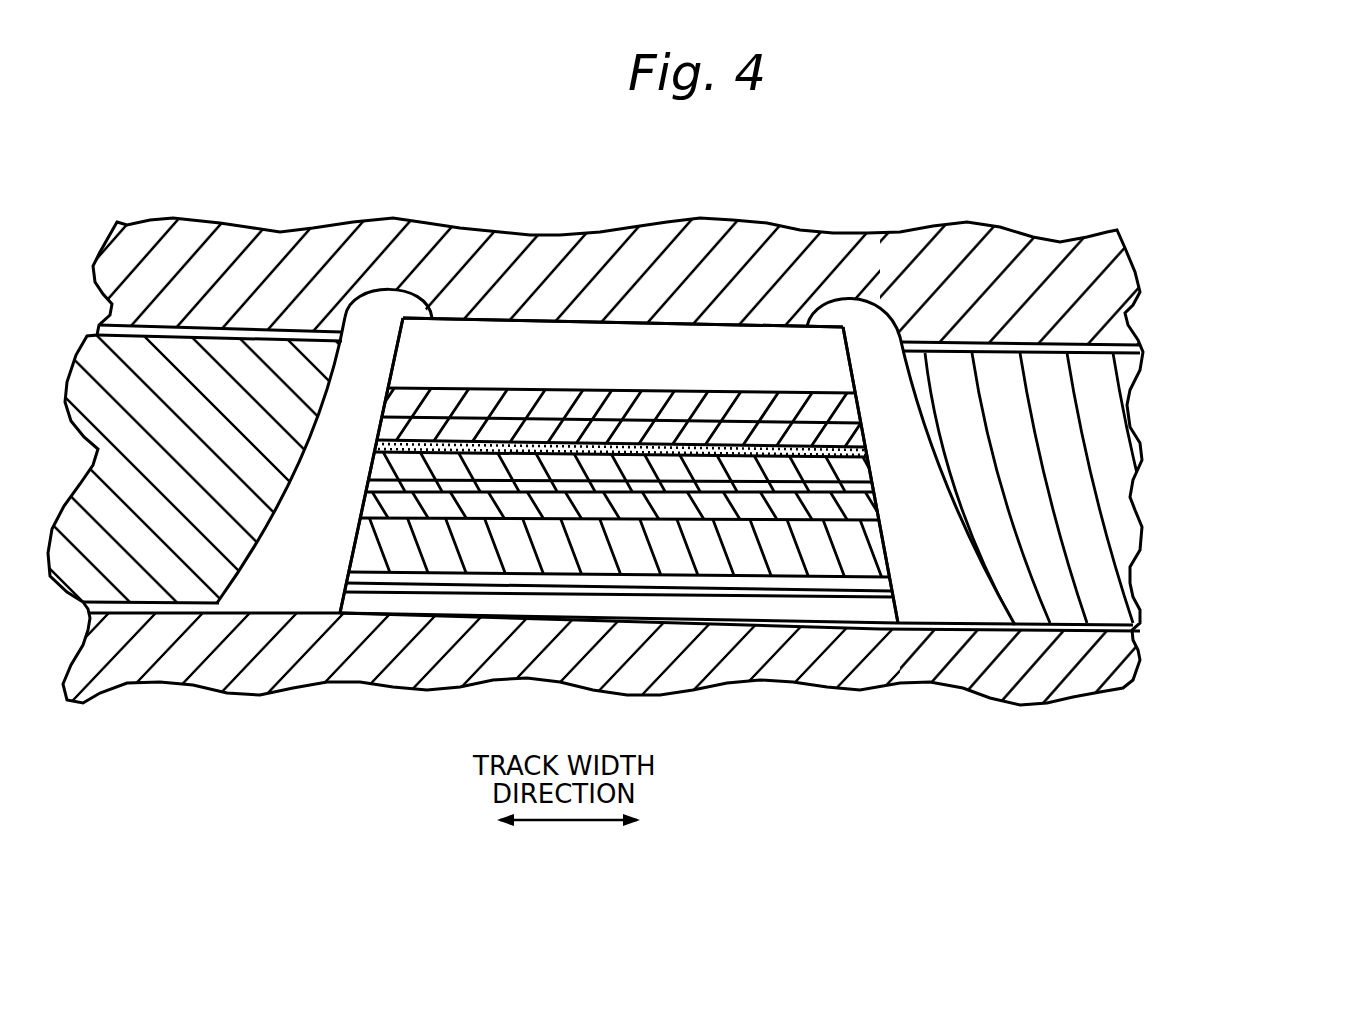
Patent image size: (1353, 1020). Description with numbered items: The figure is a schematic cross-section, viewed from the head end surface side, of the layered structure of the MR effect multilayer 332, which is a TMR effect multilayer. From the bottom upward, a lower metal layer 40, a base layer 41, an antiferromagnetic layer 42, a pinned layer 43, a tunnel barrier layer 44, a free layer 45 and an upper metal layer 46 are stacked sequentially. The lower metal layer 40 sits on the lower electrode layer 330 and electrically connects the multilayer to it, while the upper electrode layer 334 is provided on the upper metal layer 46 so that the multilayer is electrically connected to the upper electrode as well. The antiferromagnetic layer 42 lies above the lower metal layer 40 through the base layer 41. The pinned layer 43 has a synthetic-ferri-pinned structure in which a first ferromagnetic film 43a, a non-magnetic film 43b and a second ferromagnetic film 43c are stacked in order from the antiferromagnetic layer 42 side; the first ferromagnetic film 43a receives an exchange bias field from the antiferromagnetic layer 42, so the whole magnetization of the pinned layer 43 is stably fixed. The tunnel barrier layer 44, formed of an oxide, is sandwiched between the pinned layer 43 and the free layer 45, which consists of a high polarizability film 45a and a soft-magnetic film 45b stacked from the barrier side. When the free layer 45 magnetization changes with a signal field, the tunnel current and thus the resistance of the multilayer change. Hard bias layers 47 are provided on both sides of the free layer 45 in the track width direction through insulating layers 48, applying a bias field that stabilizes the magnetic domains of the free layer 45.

The lower metal layer 40 is at (768, 618).
The base layer 41 is at (890, 591).
The antiferromagnetic layer 42 is at (882, 560).
The pinned layer 43 is at (815, 491).
The first ferromagnetic film 43a is at (876, 519).
The non-magnetic film 43b is at (872, 497).
The second ferromagnetic film 43c is at (870, 481).
The tunnel barrier layer 44 is at (866, 455).
The free layer 45 is at (812, 399).
The high polarizability film 45a is at (862, 437).
The soft-magnetic film 45b is at (858, 410).
The upper metal layer 46 is at (828, 360).
The hard bias layer 47 is at (222, 380).
The insulating layer 48 is at (378, 323).
The lower electrode layer 330 is at (837, 660).
The MR effect multilayer 332 is at (842, 470).
The upper electrode layer 334 is at (800, 250).